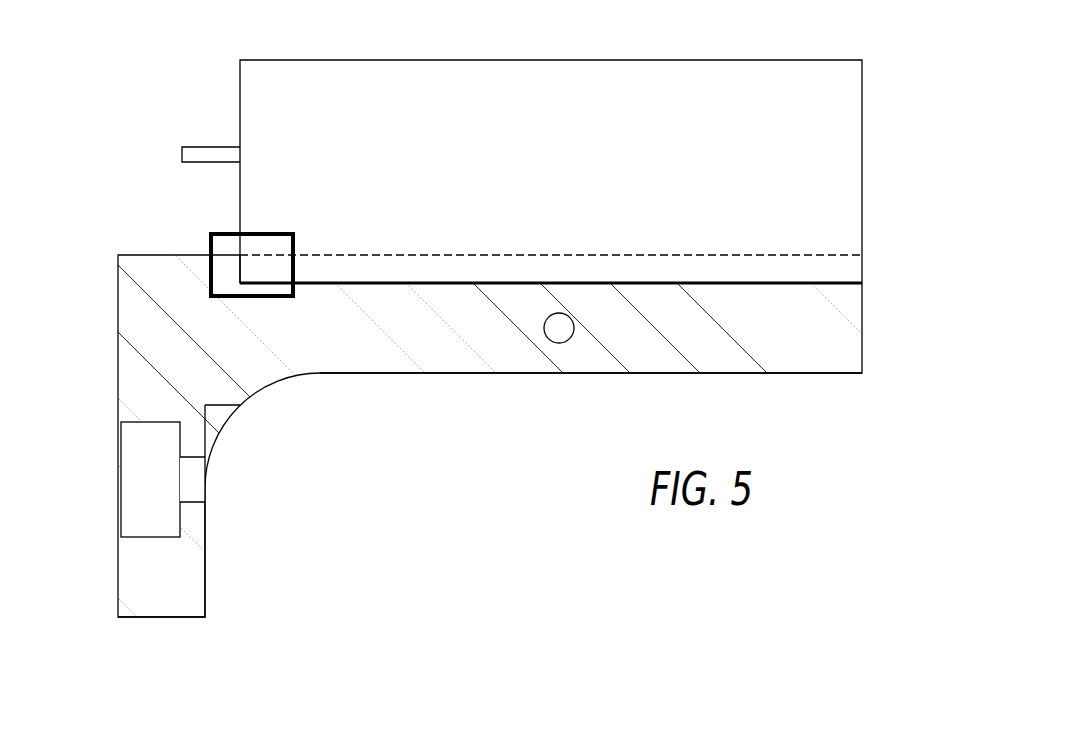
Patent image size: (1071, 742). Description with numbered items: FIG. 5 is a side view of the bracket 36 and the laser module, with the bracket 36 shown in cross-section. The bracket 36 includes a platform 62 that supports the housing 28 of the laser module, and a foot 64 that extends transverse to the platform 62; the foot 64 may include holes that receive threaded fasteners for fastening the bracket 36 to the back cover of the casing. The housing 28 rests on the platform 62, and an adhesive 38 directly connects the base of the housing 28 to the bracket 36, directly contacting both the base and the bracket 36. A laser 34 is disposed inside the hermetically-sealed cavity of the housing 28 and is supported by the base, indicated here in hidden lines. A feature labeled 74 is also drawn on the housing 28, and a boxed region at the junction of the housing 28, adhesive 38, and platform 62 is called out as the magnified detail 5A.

The housing 28 is at (803, 59).
The tab 74 is at (197, 146).
The laser 34 is at (828, 254).
The adhesive 38 is at (838, 283).
The platform 62 is at (862, 340).
The bracket 36 is at (840, 357).
The foot 64 is at (118, 575).
The detail view callout 5A is at (293, 296).